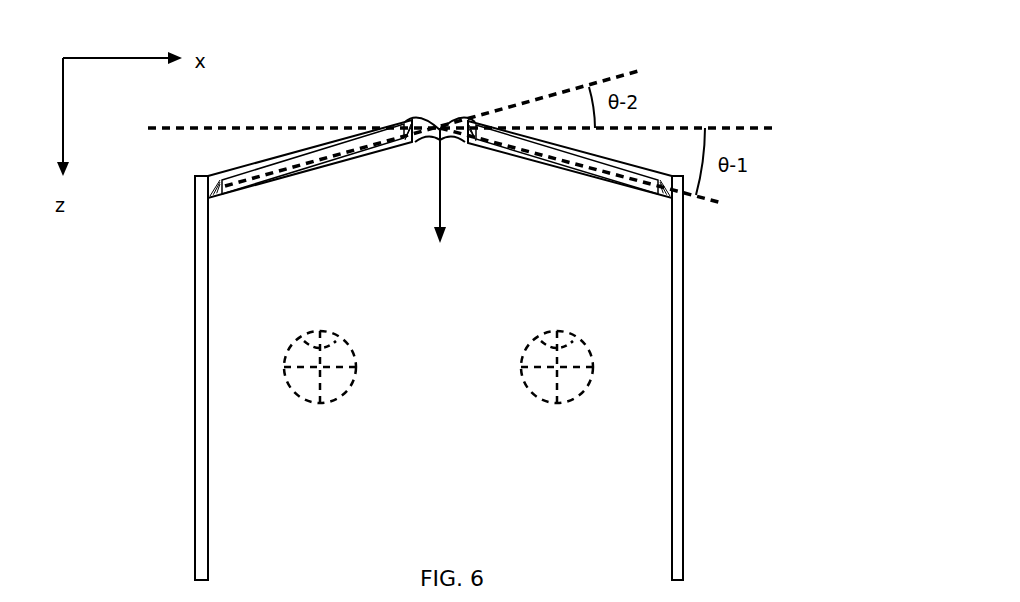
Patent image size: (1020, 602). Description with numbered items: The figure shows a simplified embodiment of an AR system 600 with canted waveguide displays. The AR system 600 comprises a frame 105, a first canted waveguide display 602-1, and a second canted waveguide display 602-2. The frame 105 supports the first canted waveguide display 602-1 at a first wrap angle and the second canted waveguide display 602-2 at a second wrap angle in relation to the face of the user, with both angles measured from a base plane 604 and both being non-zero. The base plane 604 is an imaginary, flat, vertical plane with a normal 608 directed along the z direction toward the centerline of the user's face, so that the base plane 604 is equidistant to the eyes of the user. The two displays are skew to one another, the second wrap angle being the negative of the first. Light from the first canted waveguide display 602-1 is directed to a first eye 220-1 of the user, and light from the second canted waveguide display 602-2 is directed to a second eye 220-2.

The AR system 600 is at (758, 53).
The first canted waveguide display 602-1 is at (640, 172).
The second canted waveguide display 602-2 is at (362, 145).
The base plane 604 is at (777, 128).
The normal 608 is at (437, 165).
The frame 105 is at (197, 331).
The first eye 220-1 is at (540, 388).
The second eye 220-2 is at (338, 388).